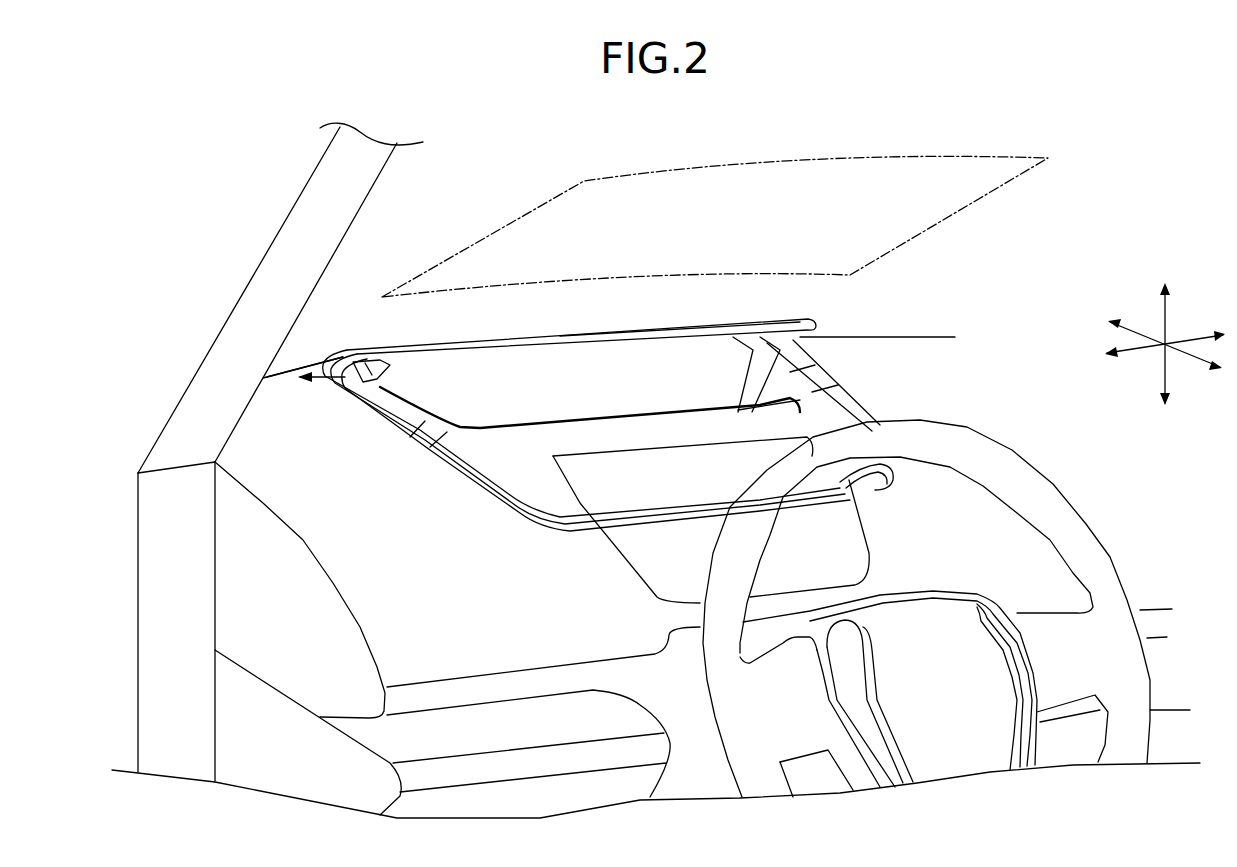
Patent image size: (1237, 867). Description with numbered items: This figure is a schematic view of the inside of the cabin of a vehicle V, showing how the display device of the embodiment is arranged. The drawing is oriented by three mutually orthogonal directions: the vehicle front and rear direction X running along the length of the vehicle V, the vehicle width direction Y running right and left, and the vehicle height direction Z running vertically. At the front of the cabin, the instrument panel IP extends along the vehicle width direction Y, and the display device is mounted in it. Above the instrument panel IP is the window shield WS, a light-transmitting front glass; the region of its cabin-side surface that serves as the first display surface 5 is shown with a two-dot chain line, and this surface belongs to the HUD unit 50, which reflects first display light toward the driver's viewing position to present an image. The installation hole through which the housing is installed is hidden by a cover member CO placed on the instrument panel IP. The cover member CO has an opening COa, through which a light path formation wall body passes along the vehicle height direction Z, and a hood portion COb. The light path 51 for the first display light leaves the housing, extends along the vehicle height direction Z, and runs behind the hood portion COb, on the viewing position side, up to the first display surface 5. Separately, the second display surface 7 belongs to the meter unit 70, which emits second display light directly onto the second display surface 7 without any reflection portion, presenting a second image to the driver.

The vehicle V is at (245, 200).
The window shield WS is at (305, 347).
The first display surface 5 is at (715, 199).
The HUD unit 50 is at (688, 161).
The instrument panel IP is at (913, 356).
The second display surface 7 is at (586, 443).
The meter unit 70 is at (510, 408).
The light path 51 is at (426, 387).
The cover member CO is at (822, 410).
The opening COa is at (785, 378).
The hood portion COb is at (633, 332).
The vehicle front and rear direction X is at (1140, 328).
The vehicle width direction Y is at (1135, 360).
The vehicle height direction Z is at (1167, 317).